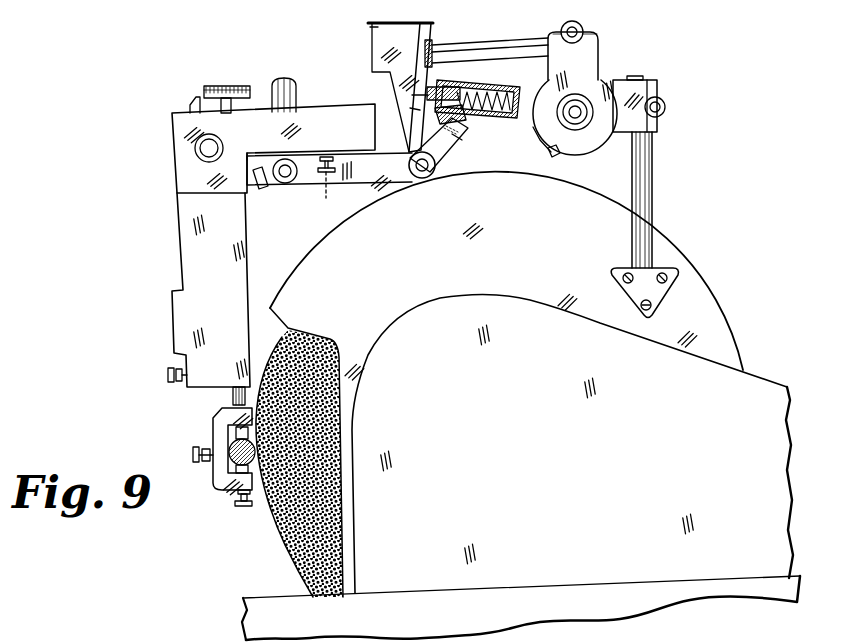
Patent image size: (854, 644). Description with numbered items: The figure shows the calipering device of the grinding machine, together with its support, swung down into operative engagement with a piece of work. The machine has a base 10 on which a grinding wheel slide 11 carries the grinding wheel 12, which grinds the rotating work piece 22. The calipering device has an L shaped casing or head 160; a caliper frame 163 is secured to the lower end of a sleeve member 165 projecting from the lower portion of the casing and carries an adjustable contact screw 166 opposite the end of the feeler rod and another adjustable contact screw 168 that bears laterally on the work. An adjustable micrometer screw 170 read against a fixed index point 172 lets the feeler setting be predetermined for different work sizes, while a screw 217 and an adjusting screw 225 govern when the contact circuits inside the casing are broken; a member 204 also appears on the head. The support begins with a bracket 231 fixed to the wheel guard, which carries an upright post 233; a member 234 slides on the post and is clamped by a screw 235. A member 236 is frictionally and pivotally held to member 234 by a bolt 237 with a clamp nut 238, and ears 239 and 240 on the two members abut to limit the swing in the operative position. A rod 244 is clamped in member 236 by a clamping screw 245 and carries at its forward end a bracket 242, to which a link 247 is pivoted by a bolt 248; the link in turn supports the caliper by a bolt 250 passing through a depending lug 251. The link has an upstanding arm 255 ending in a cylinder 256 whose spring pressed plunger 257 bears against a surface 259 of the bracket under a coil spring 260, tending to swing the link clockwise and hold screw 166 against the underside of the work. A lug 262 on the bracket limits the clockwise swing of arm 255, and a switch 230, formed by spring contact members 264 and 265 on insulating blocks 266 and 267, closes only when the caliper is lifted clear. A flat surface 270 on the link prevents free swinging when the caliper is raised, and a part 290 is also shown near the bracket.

The base 10 is at (257, 626).
The grinding wheel slide 11 is at (760, 390).
The grinding wheel 12 is at (290, 553).
The work piece 22 is at (232, 442).
The L shaped casing or head 160 is at (182, 173).
The caliper frame 163 is at (212, 438).
The sleeve member 165 is at (233, 397).
The adjustable contact screw 166 is at (243, 503).
The adjustable contact screw 168 is at (194, 455).
The adjustable micrometer screw 170 is at (221, 85).
The fixed index point 172 is at (192, 100).
The post 204 is at (296, 92).
The screw 217 is at (323, 194).
The adjusting screw 225 is at (167, 374).
The switch 230 is at (447, 41).
The bracket 231 is at (648, 289).
The upright post 233 is at (642, 228).
The member 234 is at (638, 117).
The screw 235 is at (667, 107).
The member 236 is at (588, 72).
The bolt 237 is at (587, 120).
The clamp nut 238 is at (578, 120).
The ear 239 is at (553, 153).
The ear 240 is at (547, 136).
The bracket 242 is at (384, 42).
The rod 244 is at (507, 50).
The clamping screw 245 is at (583, 24).
The link 247 is at (383, 172).
The bolt 248 is at (424, 177).
The bolt 250 is at (285, 184).
The depending lug 251 is at (248, 154).
The upstanding arm 255 is at (440, 148).
The cylinder 256 is at (500, 90).
The spring pressed plunger 257 is at (455, 92).
The surface 259 is at (428, 97).
The coil spring 260 is at (493, 117).
The lug 262 is at (463, 148).
The spring contact member 264 is at (431, 27).
The spring contact member 265 is at (418, 110).
The insulating block 266 is at (372, 30).
The insulating block 267 is at (415, 135).
The flat surface 270 is at (262, 172).
The arm 290 is at (370, 27).